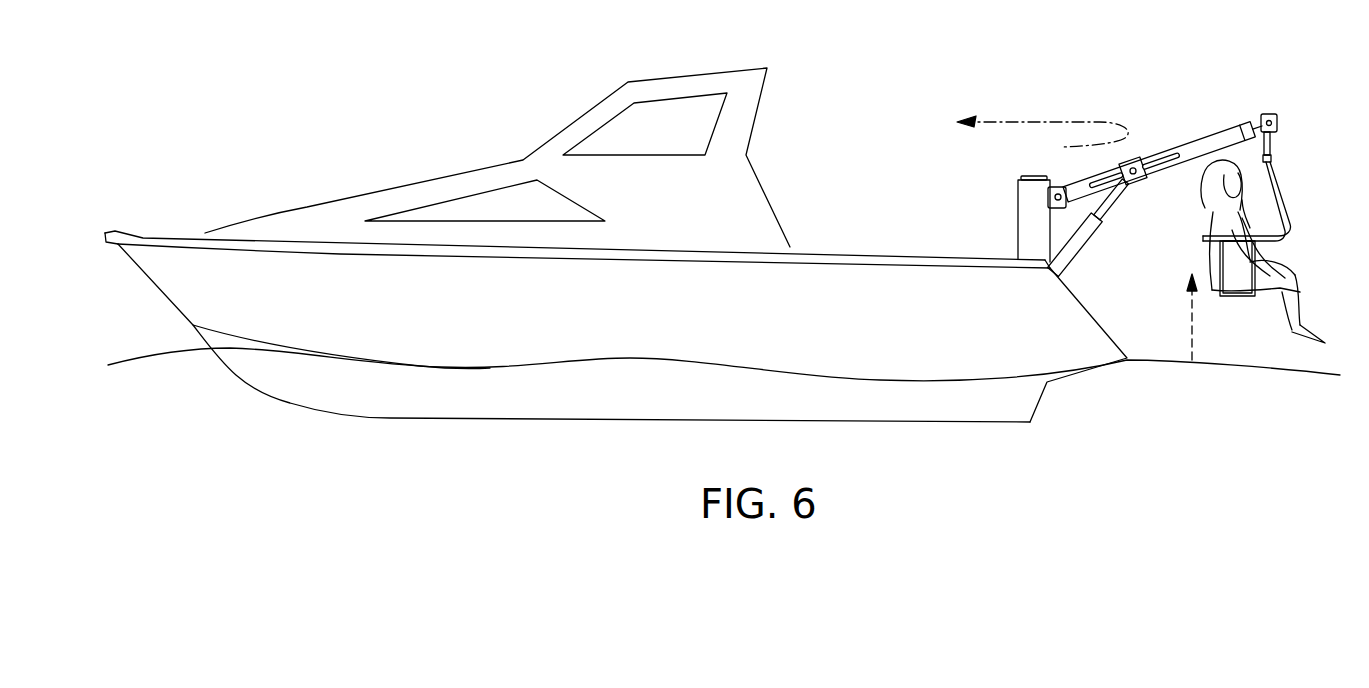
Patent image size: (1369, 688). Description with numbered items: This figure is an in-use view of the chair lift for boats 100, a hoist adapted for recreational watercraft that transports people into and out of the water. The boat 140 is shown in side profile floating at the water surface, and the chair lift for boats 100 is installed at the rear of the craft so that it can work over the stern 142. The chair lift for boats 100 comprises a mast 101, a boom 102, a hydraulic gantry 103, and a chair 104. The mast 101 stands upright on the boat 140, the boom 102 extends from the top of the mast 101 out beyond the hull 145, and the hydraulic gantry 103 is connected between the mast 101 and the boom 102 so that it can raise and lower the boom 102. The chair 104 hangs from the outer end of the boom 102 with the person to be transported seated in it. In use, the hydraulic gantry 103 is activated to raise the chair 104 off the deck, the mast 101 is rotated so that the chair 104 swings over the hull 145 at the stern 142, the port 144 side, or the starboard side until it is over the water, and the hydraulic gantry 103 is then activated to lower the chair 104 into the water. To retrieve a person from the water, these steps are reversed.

The chair lift for boats 100 is at (957, 163).
The mast 101 is at (1025, 222).
The boom 102 is at (1208, 140).
The hydraulic gantry 103 is at (1093, 247).
The chair 104 is at (1300, 220).
The boat 140 is at (307, 223).
The stern 142 is at (1097, 350).
The port 144 is at (610, 333).
The hull 145 is at (393, 298).